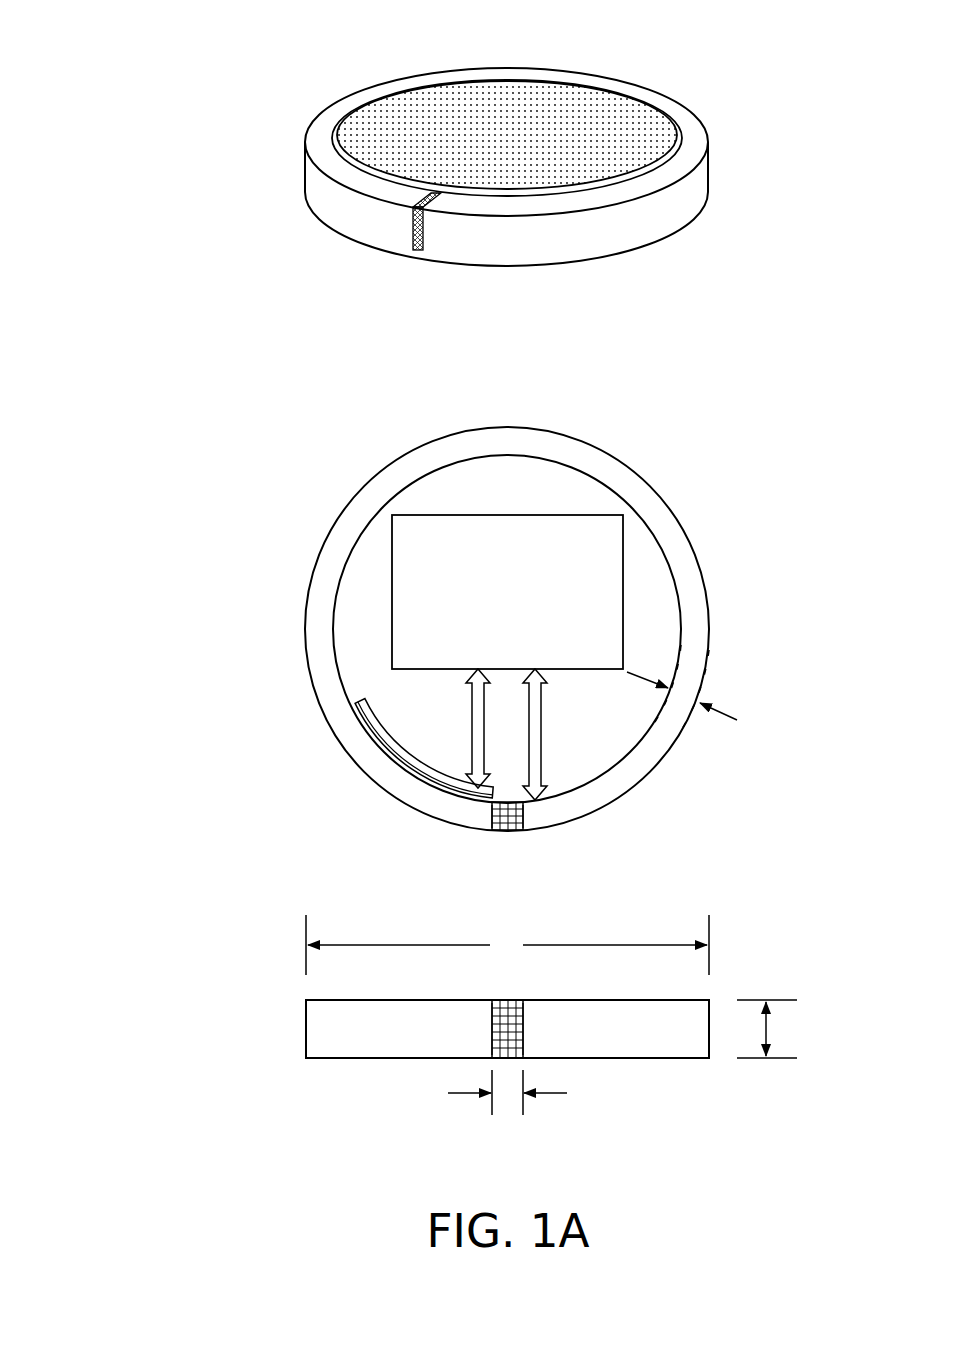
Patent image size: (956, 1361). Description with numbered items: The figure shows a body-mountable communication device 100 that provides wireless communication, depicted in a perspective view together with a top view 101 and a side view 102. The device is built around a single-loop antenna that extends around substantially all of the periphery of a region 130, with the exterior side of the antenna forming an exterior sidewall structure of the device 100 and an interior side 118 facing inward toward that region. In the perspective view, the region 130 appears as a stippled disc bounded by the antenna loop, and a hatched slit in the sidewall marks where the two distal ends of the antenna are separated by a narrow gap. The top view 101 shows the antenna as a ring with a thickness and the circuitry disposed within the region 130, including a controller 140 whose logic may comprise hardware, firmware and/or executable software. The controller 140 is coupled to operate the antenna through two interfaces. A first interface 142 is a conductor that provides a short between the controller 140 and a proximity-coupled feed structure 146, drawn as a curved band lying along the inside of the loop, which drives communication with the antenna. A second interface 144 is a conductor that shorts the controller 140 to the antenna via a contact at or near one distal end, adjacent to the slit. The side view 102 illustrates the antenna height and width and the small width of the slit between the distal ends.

The body-mountable communication device 100 is at (96, 72).
The top view 101 is at (96, 504).
The side view 102 is at (96, 960).
The interior side 118 is at (512, 464).
The region 130 is at (525, 148).
The controller 140 is at (489, 619).
The interface 142 is at (470, 742).
The interface 144 is at (546, 742).
The proximity-coupled feed structure 146 is at (378, 745).